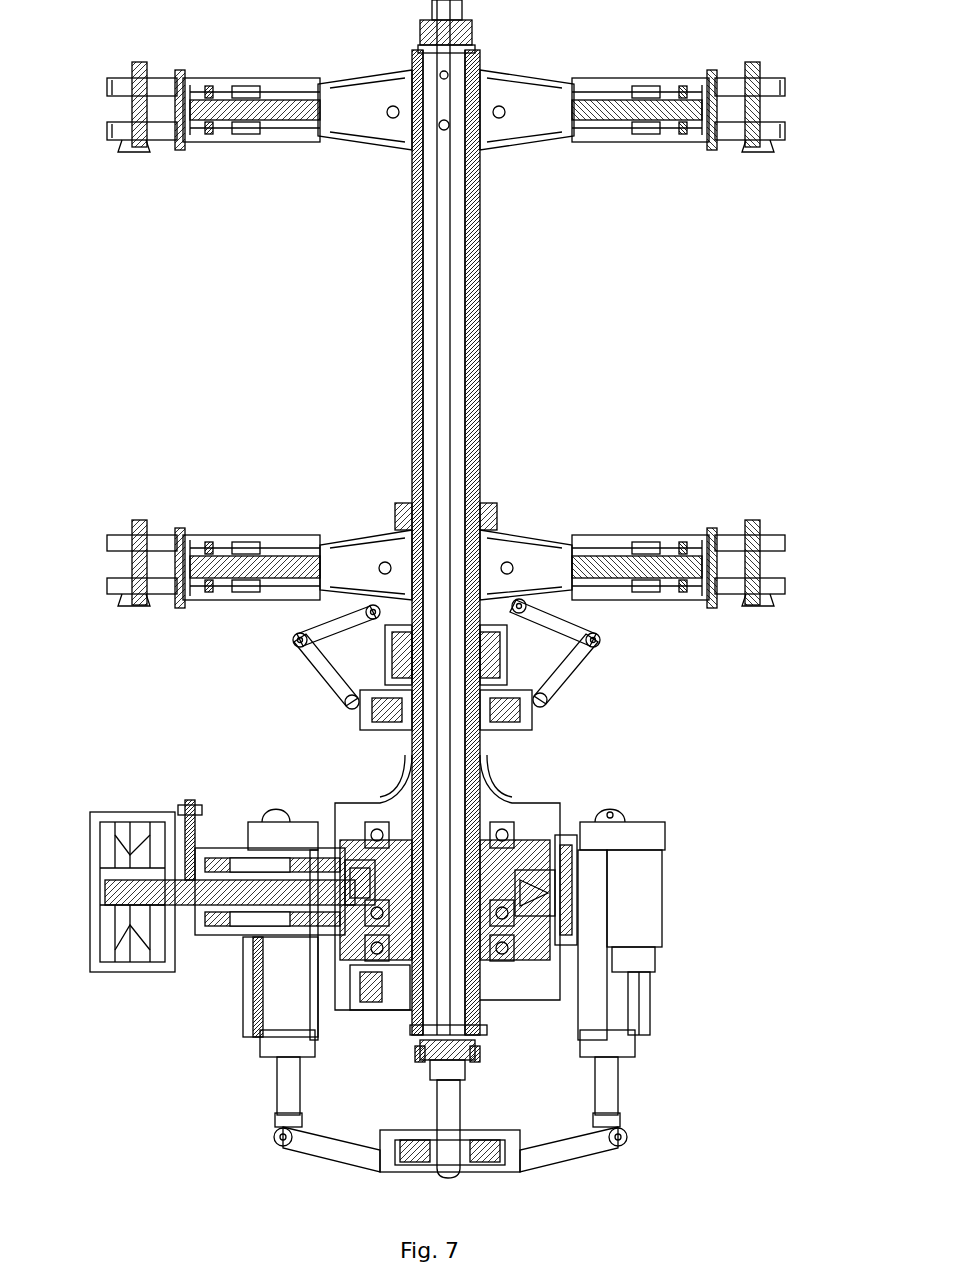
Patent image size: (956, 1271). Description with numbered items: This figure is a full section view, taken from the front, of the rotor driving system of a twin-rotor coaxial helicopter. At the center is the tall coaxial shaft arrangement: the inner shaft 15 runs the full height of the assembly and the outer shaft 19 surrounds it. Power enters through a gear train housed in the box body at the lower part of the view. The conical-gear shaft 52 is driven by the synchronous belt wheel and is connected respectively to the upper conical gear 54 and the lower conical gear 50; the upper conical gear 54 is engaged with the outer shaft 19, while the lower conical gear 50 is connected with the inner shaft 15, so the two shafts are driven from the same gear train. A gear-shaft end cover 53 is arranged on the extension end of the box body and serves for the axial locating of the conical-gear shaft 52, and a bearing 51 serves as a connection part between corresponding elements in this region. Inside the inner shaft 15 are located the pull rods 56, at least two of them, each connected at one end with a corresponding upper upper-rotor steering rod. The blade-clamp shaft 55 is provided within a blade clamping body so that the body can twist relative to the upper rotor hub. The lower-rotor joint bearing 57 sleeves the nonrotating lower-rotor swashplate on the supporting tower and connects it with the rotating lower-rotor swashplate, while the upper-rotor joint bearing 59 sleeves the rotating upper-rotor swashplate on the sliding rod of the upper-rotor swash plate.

The inner shaft 15 is at (487, 353).
The outer shaft 19 is at (514, 512).
The lower conical gear 50 is at (350, 940).
The bearing 51 is at (385, 958).
The conical-gear shaft 52 is at (136, 812).
The gear-shaft end cover 53 is at (193, 798).
The upper conical gear 54 is at (362, 835).
The blade-clamp shaft 55 is at (212, 548).
The pull rods 56 is at (405, 203).
The lower-rotor joint bearing 57 is at (515, 678).
The upper-rotor joint bearing 59 is at (470, 1135).